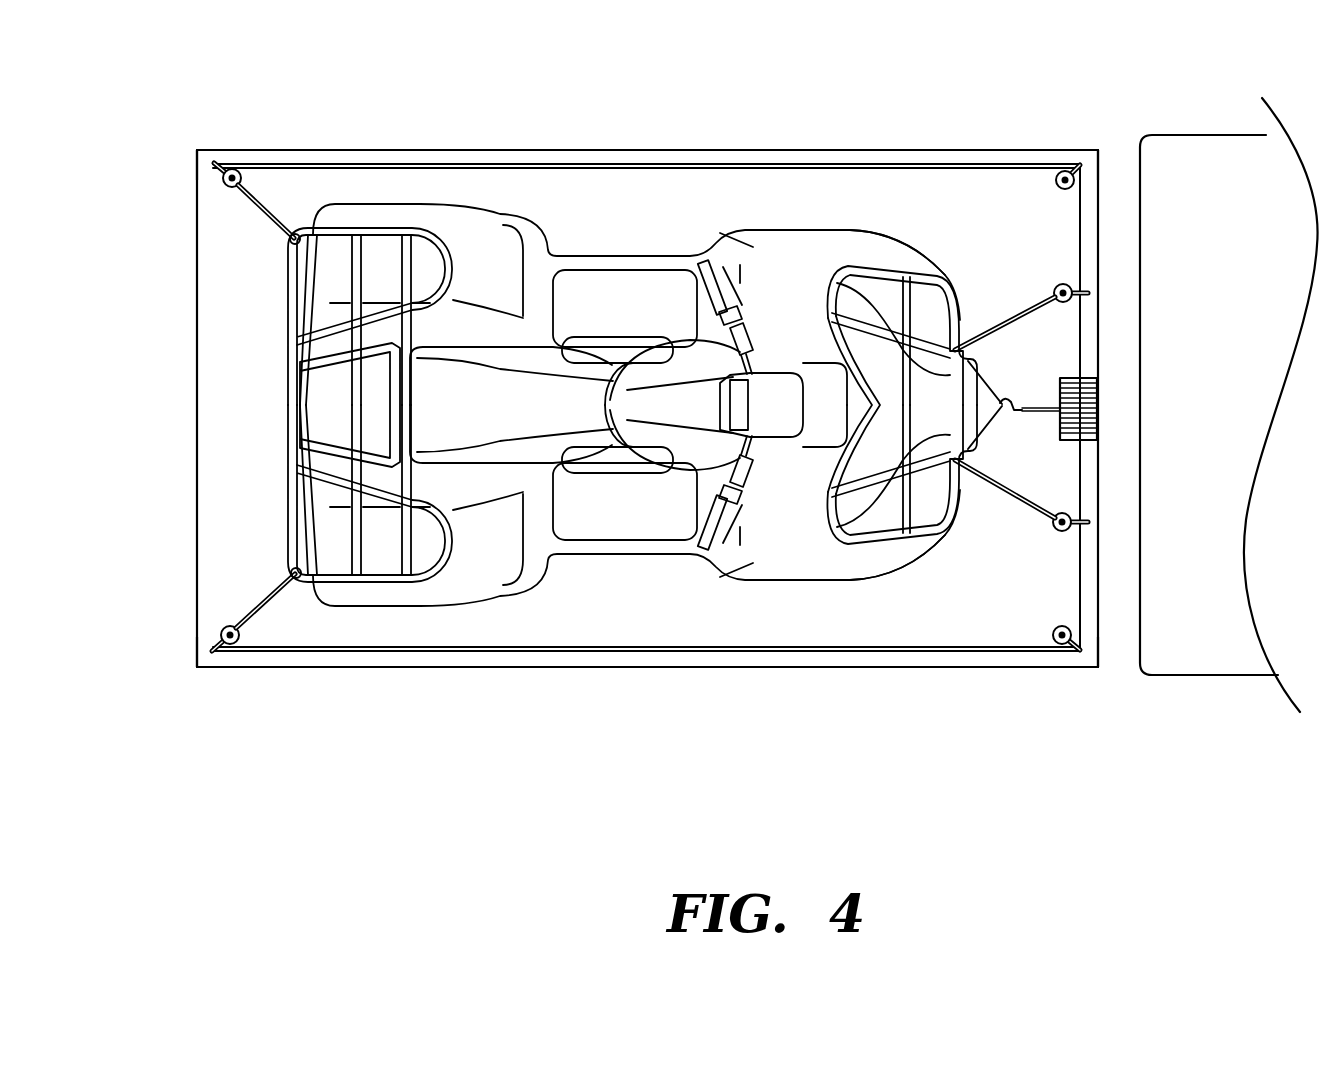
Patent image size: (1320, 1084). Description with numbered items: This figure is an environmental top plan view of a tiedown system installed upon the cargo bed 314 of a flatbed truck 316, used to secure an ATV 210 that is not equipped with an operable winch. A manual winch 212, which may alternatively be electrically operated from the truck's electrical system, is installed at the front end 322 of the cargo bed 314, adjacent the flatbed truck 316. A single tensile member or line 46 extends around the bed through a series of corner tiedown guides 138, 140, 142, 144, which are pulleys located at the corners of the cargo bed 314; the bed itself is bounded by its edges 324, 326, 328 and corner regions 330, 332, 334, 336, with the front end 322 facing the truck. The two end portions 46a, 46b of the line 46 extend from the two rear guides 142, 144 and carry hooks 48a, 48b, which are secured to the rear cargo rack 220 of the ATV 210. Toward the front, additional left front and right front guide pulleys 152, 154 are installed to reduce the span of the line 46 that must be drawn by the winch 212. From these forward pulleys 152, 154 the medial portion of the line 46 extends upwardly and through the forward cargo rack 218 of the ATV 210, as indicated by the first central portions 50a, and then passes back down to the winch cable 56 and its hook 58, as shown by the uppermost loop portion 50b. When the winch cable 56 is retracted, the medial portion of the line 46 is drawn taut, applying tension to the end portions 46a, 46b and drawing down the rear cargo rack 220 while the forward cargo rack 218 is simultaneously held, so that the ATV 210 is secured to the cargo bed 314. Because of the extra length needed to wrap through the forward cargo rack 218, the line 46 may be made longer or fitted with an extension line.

The tensile member or line 46 is at (783, 655).
The end portion of the tensile member 46a is at (239, 207).
The end portion of the tensile member 46b is at (251, 604).
The hook 48a is at (291, 245).
The hook 48b is at (289, 568).
The first central portions of the tensile member 50a is at (1022, 314).
The uppermost loop portion of the tensile member 50b is at (828, 291).
The winch cable 56 is at (1046, 421).
The hook 58 is at (1011, 400).
The corner tiedown guide 138 is at (1047, 182).
The corner tiedown guide 140 is at (1048, 634).
The rear guide 142 is at (252, 181).
The rear guide 144 is at (250, 634).
The left front guide pulley 152 is at (1053, 286).
The right front guide pulley 154 is at (1055, 530).
The ATV 210 is at (641, 255).
The manual winch 212 is at (1100, 388).
The forward cargo rack 218 is at (921, 256).
The rear cargo rack 220 is at (372, 228).
The cargo bed 314 is at (657, 621).
The flatbed truck 316 is at (1212, 135).
The front end of the cargo bed 322 is at (1100, 262).
The rear edge of platform 324 is at (197, 405).
The side edge of platform 326 is at (736, 162).
The side edge of platform 328 is at (556, 668).
The platform corner 330 is at (1092, 150).
The platform corner 332 is at (1092, 668).
The platform corner 334 is at (204, 151).
The platform corner 336 is at (204, 668).